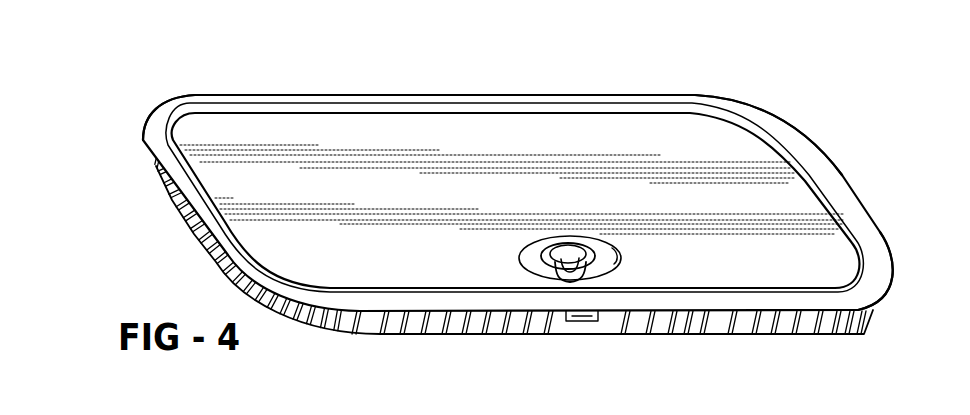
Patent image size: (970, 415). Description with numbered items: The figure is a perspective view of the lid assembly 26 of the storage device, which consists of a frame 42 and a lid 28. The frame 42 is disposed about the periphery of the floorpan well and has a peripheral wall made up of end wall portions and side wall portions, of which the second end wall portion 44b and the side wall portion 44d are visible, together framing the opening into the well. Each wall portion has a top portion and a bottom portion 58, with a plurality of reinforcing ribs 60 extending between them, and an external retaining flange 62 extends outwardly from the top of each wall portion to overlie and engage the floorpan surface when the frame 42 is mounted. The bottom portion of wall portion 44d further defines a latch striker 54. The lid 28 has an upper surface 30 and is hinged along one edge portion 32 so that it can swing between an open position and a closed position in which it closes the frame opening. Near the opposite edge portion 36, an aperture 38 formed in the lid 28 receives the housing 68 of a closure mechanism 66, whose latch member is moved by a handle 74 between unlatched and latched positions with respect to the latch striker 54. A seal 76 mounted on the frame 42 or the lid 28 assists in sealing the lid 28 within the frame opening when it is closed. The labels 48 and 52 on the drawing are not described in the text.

The lid assembly 26 is at (150, 94).
The lid 28 is at (757, 139).
The upper surface 30 is at (422, 199).
The edge portion 32 is at (477, 112).
The opposite edge portion 36 is at (600, 289).
The aperture 38 is at (607, 252).
The frame 42 is at (747, 104).
The second end wall portion 44b is at (200, 230).
The side wall portion 44d is at (415, 337).
The top surface of rim 48 is at (452, 94).
The rib 52 is at (533, 337).
The latch striker 54 is at (578, 322).
The bottom portion 58 is at (857, 330).
The reinforcing ribs 60 is at (817, 337).
The external retaining flange 62 is at (893, 288).
The closure mechanism 66 is at (520, 267).
The housing 68 is at (618, 264).
The handle 74 is at (563, 245).
The seal 76 is at (178, 114).